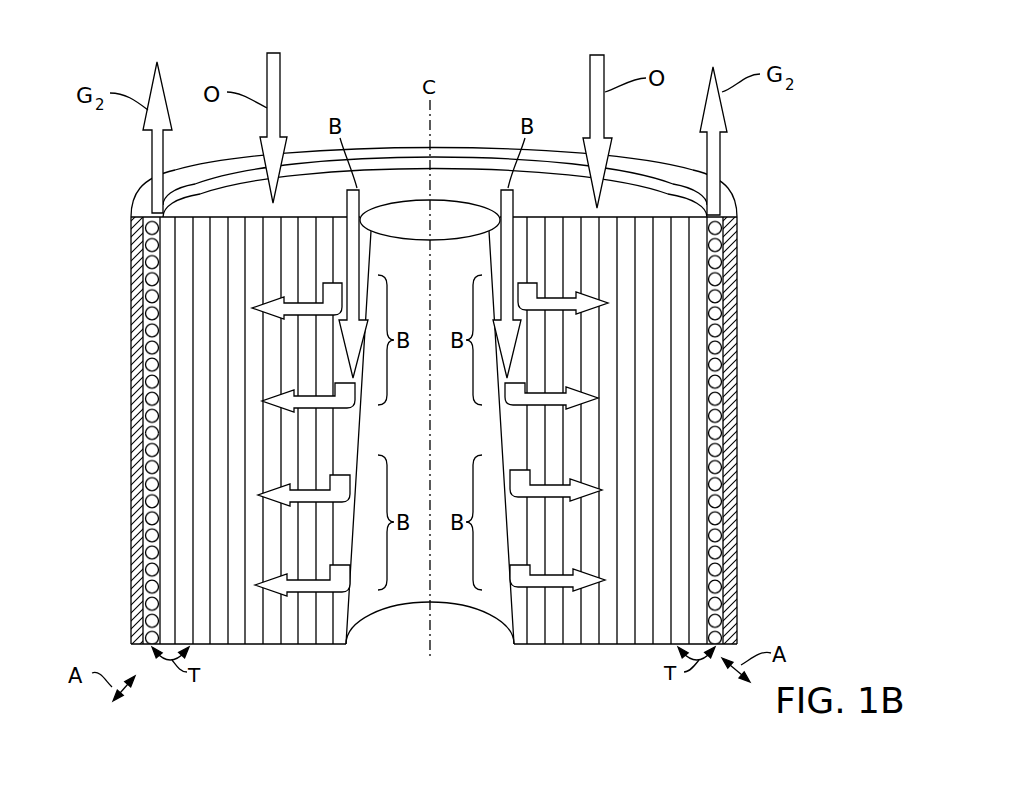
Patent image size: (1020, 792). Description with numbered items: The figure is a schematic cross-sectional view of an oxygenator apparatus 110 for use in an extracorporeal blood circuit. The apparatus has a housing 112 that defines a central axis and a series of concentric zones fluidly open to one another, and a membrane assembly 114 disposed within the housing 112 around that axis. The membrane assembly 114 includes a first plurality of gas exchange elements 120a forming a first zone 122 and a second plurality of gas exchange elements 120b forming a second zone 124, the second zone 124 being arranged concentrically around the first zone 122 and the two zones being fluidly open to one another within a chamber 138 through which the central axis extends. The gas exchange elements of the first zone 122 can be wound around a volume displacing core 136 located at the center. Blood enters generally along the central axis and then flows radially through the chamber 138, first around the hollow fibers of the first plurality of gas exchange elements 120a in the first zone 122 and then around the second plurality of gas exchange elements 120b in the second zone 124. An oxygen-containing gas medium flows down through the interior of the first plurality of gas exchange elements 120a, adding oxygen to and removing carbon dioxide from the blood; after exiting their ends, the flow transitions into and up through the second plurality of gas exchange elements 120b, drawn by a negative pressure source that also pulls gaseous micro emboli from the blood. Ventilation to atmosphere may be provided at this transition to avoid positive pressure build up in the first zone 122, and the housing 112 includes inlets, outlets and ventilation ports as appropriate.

The oxygenator apparatus 110 is at (90, 65).
The housing 112 is at (740, 350).
The membrane assembly 114 is at (175, 397).
The first plurality of gas exchange elements 120a is at (184, 562).
The second plurality of gas exchange elements 120b is at (146, 311).
The first zone 122 is at (683, 458).
The second zone 124 is at (718, 587).
The volume displacing core 136 is at (446, 210).
The chamber 138 is at (408, 165).